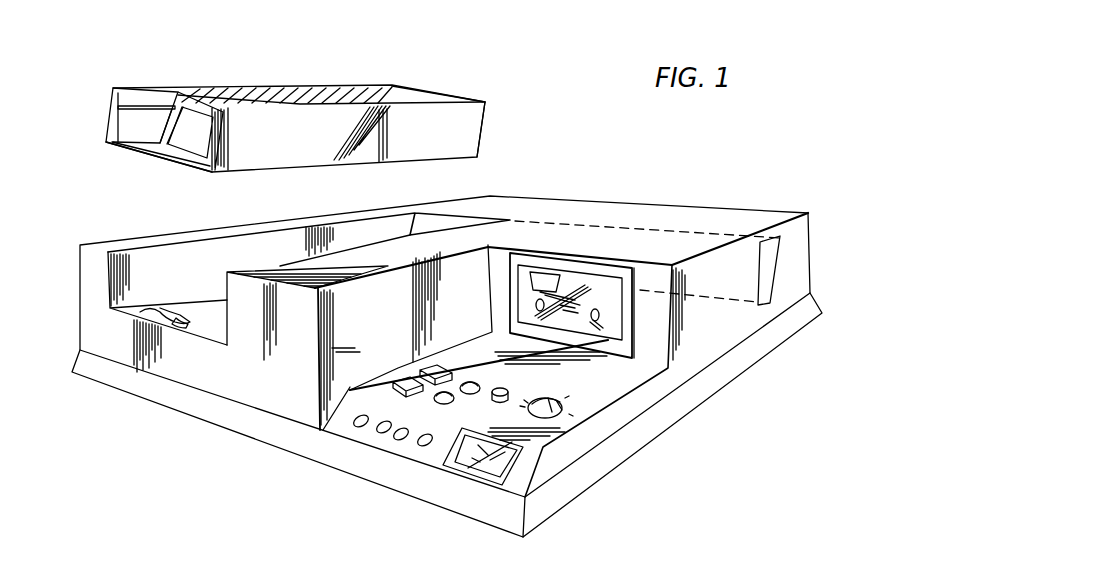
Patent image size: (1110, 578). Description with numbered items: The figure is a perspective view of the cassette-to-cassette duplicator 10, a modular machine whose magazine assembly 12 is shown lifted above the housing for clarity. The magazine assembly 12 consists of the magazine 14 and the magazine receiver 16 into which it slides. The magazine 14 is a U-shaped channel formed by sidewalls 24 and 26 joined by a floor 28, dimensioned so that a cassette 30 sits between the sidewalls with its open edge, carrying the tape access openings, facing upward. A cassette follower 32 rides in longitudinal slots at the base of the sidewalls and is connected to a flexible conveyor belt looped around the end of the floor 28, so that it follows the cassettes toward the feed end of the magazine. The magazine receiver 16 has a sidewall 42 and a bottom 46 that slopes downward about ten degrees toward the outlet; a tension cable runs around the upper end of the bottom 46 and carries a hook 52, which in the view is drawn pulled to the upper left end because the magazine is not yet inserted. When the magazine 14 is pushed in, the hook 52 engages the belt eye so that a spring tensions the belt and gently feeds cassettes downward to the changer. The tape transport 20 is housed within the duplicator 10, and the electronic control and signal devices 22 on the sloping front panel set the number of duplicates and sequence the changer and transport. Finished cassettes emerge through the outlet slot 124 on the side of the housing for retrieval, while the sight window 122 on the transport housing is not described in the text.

The cassette-to-cassette duplicator 10 is at (700, 198).
The magazine assembly 12 is at (285, 145).
The magazine 14 is at (479, 155).
The magazine receiver 16 is at (195, 252).
The tape transport 20 is at (635, 363).
The electronic control and signal devices 22 is at (402, 440).
The sidewall 24 is at (162, 110).
The sidewall 26 is at (280, 160).
The floor 28 is at (158, 157).
The cassette 30 is at (295, 93).
The cassette follower 32 is at (182, 108).
The sidewall 42 is at (127, 290).
The bottom 46 is at (112, 308).
The hook 52 is at (175, 320).
The display screen 122 is at (607, 313).
The outlet slot 124 is at (775, 245).